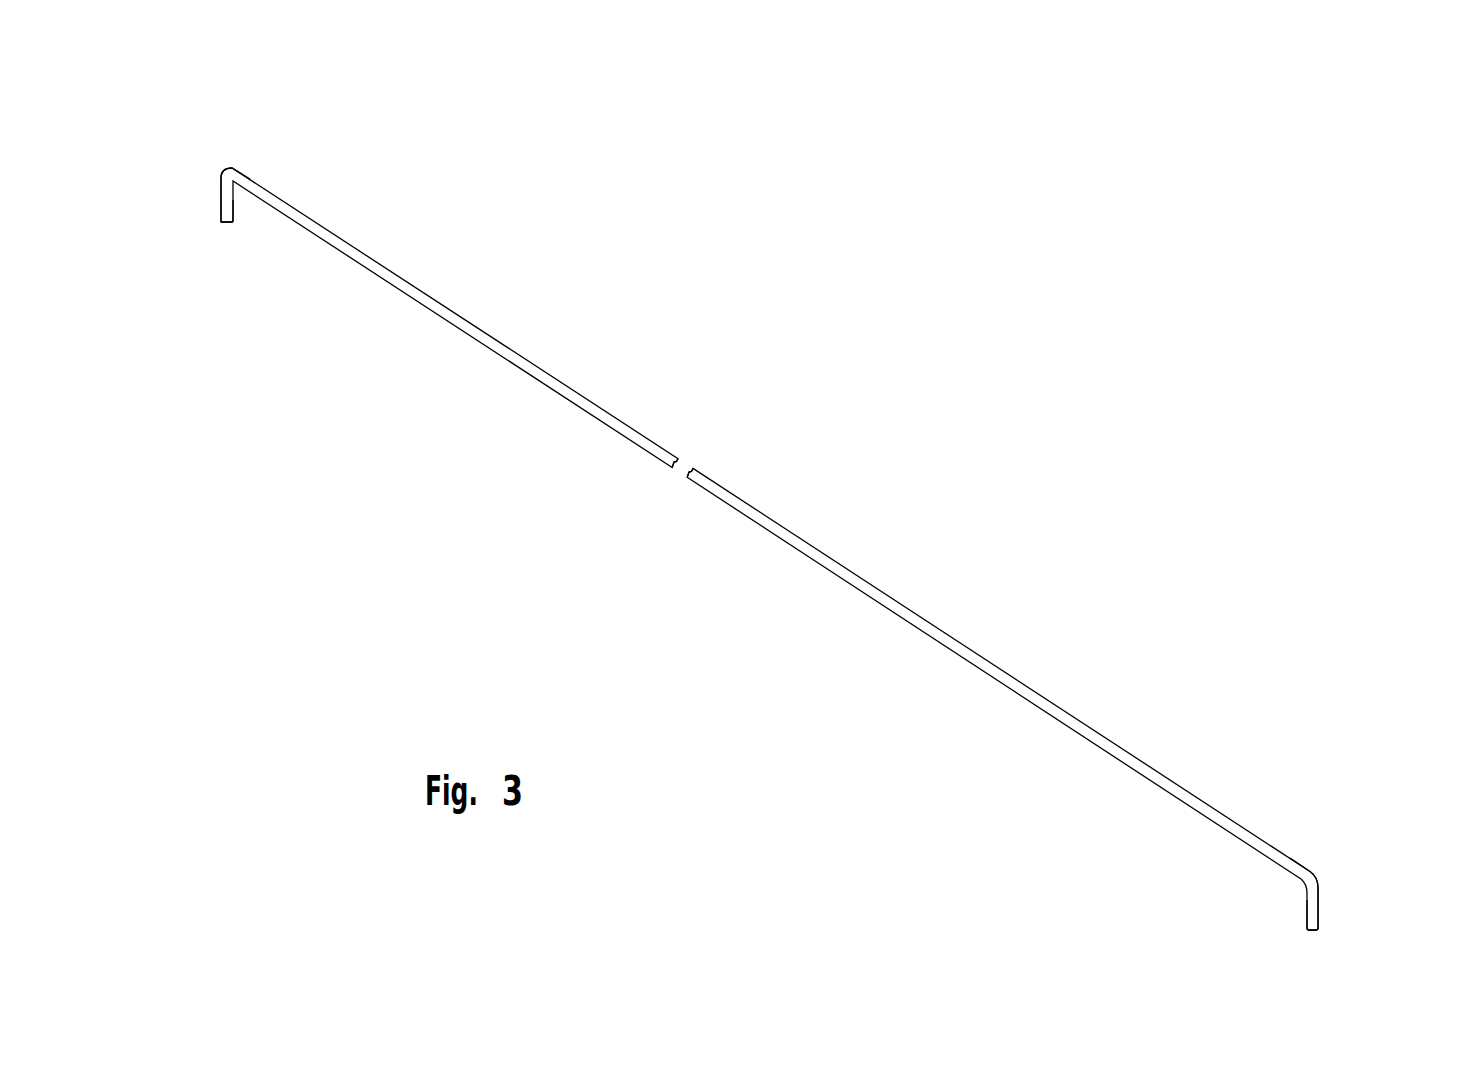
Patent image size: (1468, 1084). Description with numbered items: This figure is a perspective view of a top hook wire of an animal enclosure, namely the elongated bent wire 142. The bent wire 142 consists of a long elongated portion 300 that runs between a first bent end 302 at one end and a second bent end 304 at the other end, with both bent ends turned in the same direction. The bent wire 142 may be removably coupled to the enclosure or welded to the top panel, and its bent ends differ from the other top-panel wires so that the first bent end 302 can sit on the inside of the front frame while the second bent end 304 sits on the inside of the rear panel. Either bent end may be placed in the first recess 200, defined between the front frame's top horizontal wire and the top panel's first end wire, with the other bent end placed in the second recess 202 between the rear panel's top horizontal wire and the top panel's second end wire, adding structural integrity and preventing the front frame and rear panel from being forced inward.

The elongated bent wire 142 is at (866, 294).
The first bent end 302 is at (226, 166).
The second recess or opening 202 is at (227, 202).
The elongated portion 300 is at (643, 444).
The second bent end 304 is at (1320, 869).
The first recess or opening 200 is at (1315, 912).